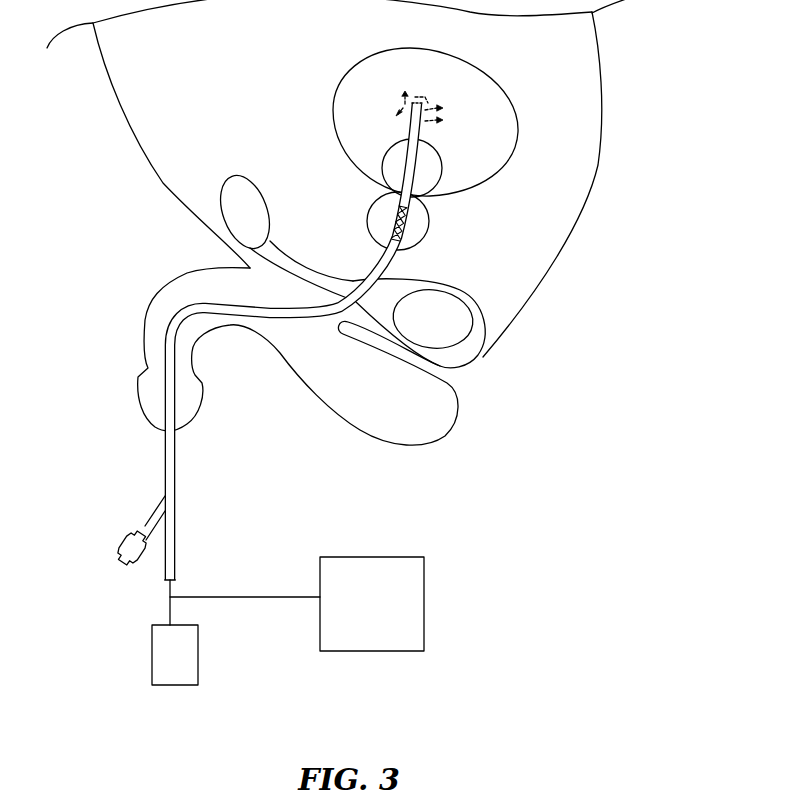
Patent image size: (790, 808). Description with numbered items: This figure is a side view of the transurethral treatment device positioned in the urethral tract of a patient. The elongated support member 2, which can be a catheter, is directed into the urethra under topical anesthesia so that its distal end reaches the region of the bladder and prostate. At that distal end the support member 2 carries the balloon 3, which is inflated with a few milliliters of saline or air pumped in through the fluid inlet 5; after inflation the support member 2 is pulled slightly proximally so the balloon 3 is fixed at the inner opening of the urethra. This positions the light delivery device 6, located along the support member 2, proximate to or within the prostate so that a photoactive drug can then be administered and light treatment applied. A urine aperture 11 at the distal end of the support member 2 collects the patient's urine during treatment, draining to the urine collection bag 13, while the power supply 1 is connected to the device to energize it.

The power supply 1 is at (382, 601).
The elongated support member 2 is at (176, 461).
The balloon 3 is at (441, 148).
The fluid inlet 5 is at (123, 562).
The light delivery device 6 is at (383, 224).
The urine aperture 11 is at (404, 100).
The urine collection bag 13 is at (176, 658).